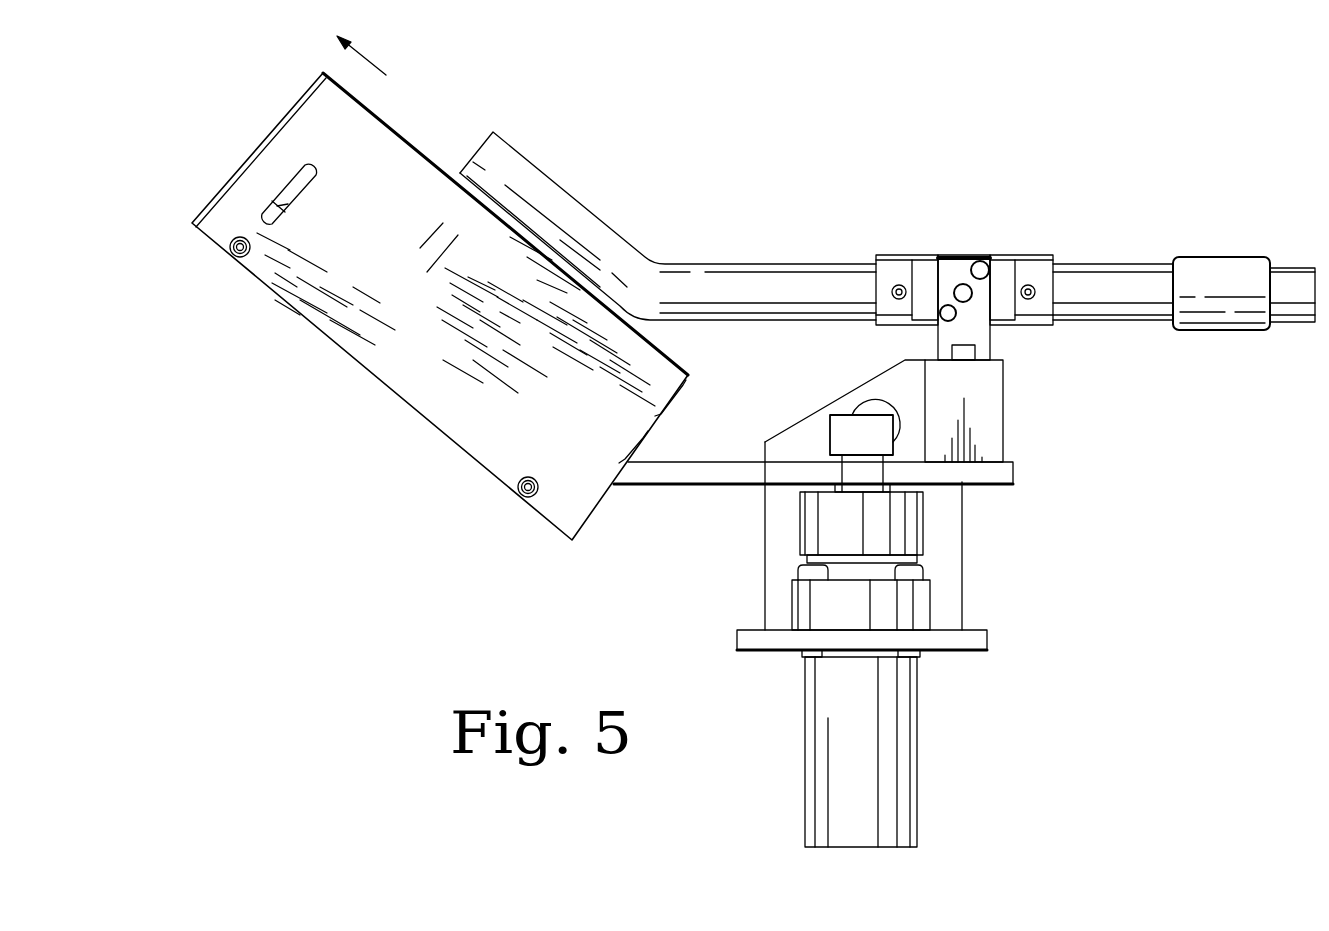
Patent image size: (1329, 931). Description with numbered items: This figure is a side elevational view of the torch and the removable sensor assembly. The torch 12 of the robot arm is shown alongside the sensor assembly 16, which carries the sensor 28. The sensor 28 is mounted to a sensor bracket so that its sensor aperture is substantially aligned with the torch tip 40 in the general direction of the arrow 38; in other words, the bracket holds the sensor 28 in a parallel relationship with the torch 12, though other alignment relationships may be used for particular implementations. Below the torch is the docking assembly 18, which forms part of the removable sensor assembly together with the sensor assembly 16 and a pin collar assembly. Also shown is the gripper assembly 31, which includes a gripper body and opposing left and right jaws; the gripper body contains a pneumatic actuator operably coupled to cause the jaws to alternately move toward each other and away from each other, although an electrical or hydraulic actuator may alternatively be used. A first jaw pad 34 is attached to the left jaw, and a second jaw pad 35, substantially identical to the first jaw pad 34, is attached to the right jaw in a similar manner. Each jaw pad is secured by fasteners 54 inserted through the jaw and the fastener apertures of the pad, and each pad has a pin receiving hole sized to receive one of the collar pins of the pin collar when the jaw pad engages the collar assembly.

The torch 12 is at (1105, 264).
The sensor assembly 16 is at (440, 346).
The docking assembly 18 is at (1025, 626).
The sensor 28 is at (436, 427).
The gripper assembly 31 is at (1035, 360).
The first jaw pad 34 is at (903, 255).
The second jaw pad 35 is at (953, 262).
The arrow 38 is at (385, 73).
The torch tip 40 is at (493, 132).
The fasteners 54 is at (980, 262).